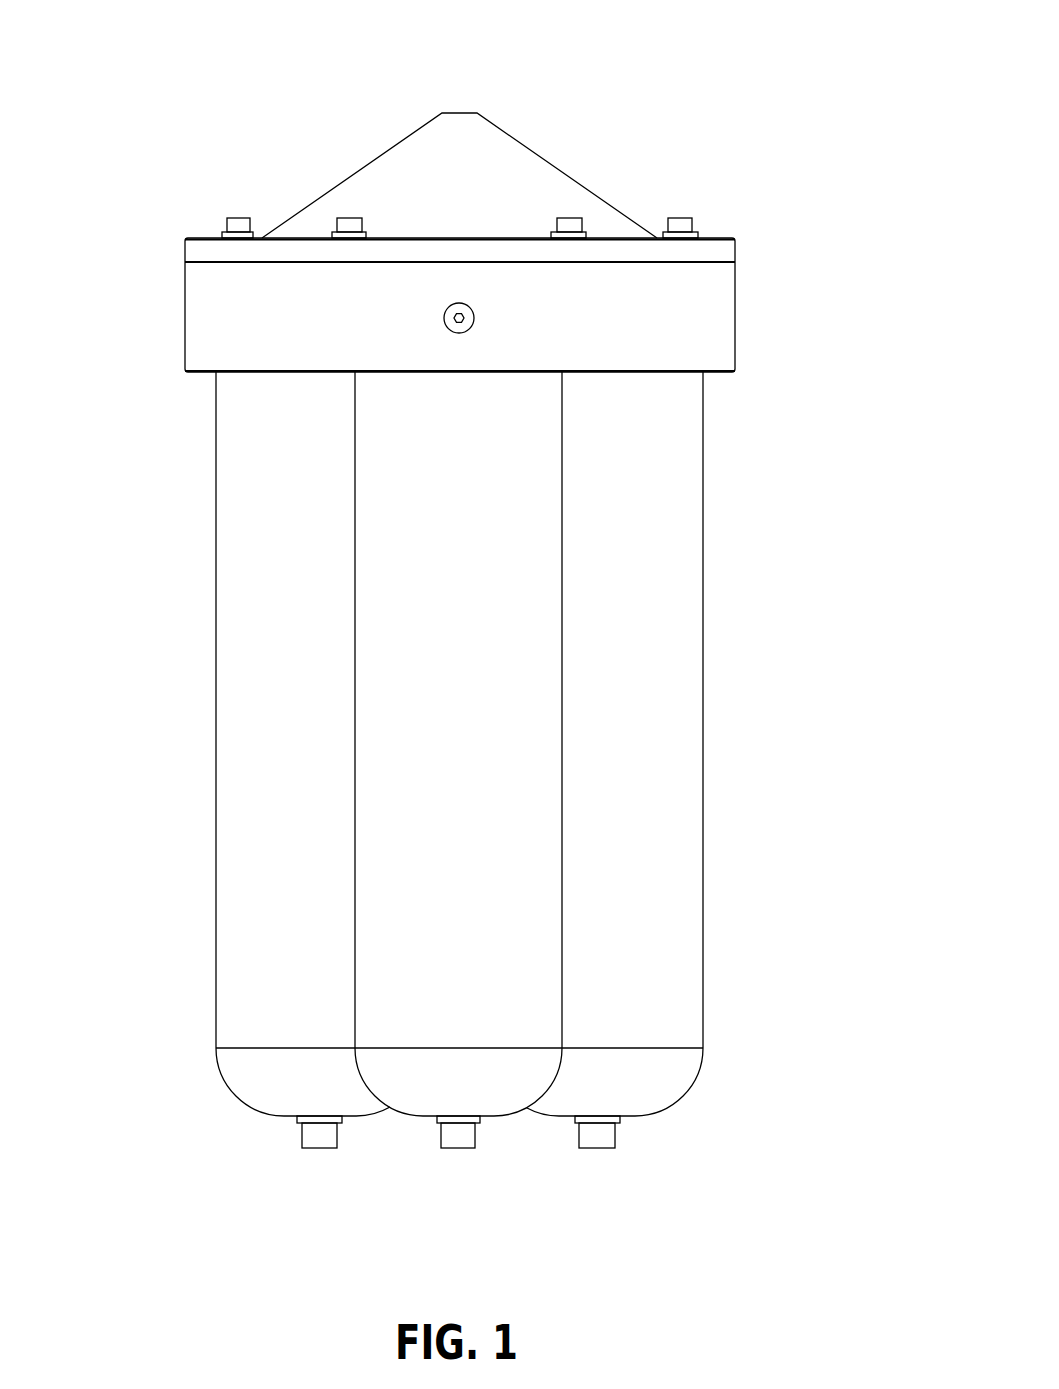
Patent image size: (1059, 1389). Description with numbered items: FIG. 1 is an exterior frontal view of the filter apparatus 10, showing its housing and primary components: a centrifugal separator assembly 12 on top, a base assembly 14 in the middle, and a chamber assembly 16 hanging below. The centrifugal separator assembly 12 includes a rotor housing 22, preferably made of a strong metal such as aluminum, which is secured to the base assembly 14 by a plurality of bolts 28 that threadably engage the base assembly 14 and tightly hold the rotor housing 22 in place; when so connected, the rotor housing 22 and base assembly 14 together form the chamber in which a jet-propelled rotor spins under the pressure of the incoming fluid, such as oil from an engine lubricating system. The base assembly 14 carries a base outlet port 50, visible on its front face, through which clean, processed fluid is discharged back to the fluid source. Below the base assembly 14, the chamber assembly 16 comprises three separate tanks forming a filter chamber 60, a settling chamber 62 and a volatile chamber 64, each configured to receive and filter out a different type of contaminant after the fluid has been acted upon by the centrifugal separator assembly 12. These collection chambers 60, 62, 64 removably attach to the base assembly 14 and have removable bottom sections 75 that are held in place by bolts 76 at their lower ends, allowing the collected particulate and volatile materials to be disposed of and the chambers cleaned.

The filter apparatus 10 is at (465, 615).
The centrifugal separator assembly 12 is at (477, 165).
The base assembly 14 is at (218, 307).
The chamber assembly 16 is at (638, 738).
The rotor housing 22 is at (350, 177).
The bolts 28 is at (237, 217).
The base outlet port 50 is at (478, 318).
The filter chamber 60 is at (562, 948).
The settling chamber 62 is at (703, 800).
The volatile chamber 64 is at (213, 853).
The removable bottom sections 75 is at (257, 1107).
The bolts 76 is at (607, 1148).